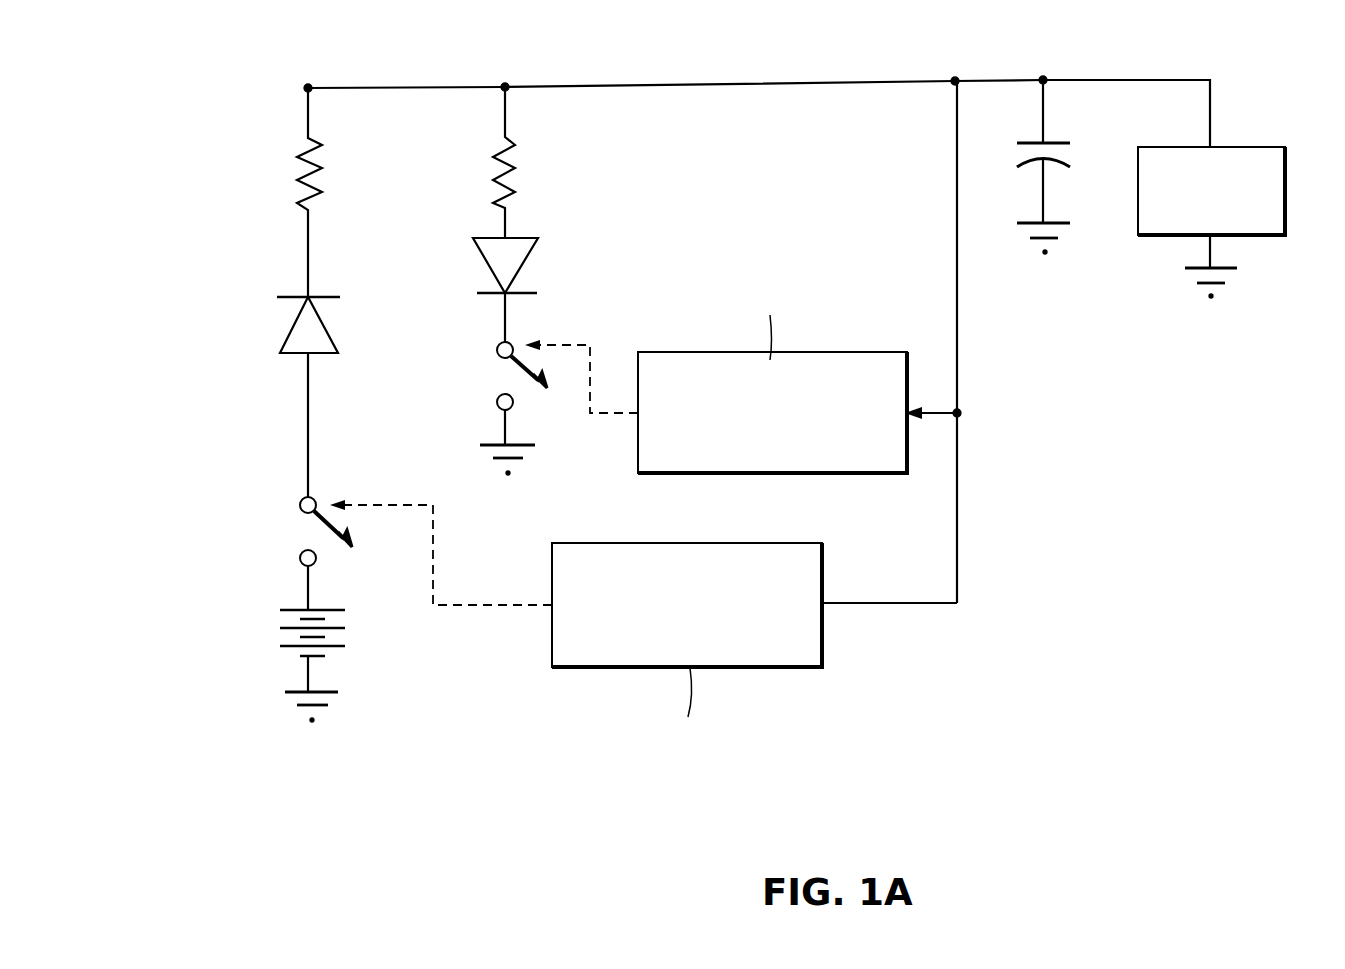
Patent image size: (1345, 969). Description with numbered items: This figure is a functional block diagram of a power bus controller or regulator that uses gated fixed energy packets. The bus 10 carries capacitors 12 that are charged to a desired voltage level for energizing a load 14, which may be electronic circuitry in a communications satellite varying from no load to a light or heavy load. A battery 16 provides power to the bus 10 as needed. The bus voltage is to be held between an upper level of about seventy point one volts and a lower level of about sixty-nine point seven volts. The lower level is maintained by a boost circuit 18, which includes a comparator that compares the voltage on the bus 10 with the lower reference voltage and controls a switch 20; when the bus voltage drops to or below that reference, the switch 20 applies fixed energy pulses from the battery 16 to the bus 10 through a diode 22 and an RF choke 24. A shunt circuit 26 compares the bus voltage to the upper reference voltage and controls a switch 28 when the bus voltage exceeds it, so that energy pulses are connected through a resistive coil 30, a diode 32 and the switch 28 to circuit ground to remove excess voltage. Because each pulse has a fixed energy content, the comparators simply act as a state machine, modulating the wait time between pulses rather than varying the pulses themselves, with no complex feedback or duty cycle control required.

The bus 10 is at (732, 79).
The capacitors 12 is at (1075, 150).
The load 14 is at (1245, 147).
The battery 16 is at (275, 622).
The boost circuit 18 is at (777, 543).
The switch 20 is at (316, 520).
The diode 22 is at (281, 327).
The RF choke 24 is at (297, 170).
The shunt circuit 26 is at (863, 352).
The switch 28 is at (513, 362).
The resistive coil 30 is at (520, 160).
The diode 32 is at (538, 257).